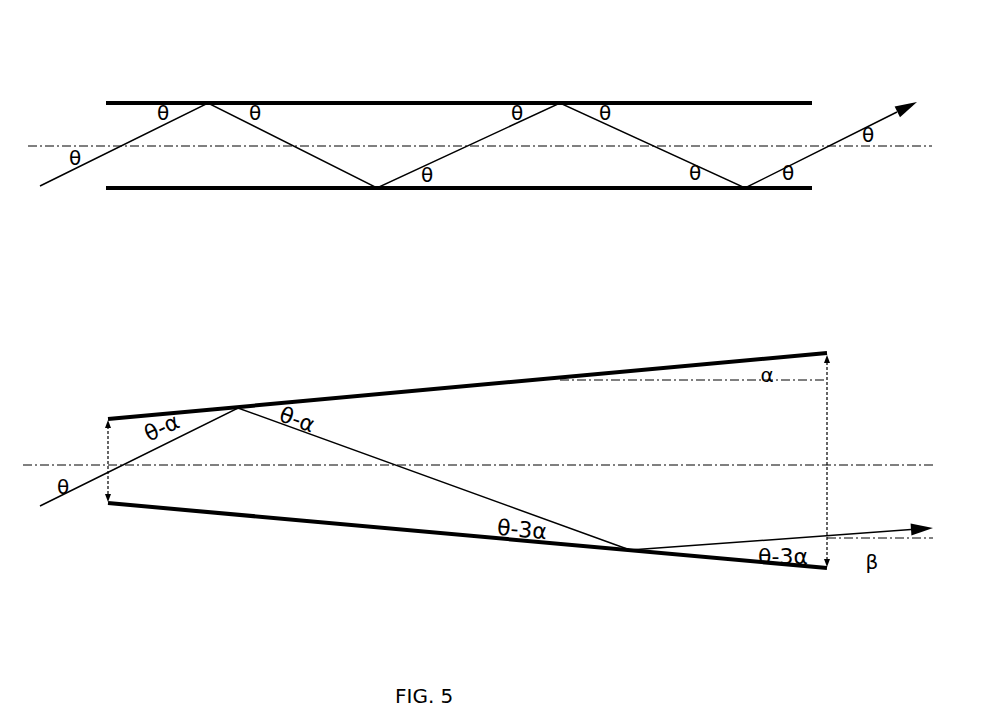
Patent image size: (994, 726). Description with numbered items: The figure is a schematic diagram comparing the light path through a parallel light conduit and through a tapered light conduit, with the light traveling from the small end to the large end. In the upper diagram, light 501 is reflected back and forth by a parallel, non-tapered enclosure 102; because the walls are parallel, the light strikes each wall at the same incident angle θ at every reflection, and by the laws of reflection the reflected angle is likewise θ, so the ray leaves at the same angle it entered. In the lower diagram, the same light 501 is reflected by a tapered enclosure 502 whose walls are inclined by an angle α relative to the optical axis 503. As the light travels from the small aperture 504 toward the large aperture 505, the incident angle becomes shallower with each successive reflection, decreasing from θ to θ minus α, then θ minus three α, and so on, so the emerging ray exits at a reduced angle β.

The parallel enclosure 102 is at (459, 113).
The light 501 is at (456, 326).
The tapered enclosure 502 is at (520, 335).
The optical axis 503 is at (478, 342).
The small aperture 504 is at (72, 456).
The large aperture 505 is at (862, 461).